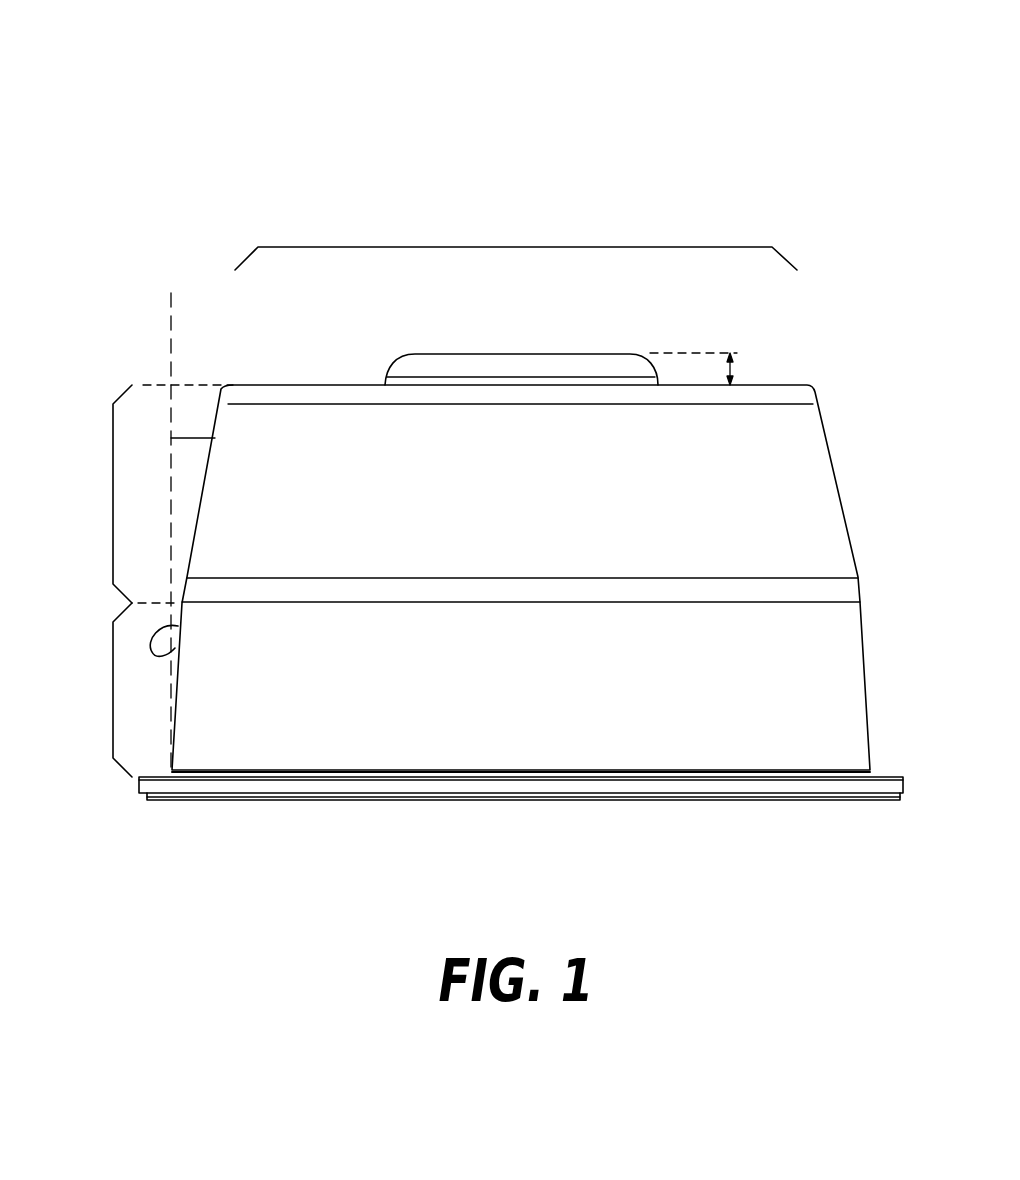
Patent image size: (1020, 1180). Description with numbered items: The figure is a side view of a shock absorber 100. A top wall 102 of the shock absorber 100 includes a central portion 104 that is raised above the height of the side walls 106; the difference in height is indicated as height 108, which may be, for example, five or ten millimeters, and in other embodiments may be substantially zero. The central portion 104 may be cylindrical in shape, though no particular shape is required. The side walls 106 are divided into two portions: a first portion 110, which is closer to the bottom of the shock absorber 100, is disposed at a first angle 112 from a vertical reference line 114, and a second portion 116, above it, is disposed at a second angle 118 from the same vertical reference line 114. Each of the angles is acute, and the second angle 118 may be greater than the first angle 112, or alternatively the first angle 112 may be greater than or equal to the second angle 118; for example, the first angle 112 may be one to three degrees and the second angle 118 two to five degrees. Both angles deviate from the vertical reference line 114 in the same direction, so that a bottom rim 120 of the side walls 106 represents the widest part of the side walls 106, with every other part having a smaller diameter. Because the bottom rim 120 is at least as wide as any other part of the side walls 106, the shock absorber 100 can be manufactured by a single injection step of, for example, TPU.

The shock absorber 100 is at (258, 91).
The top wall 102 is at (517, 247).
The central portion 104 is at (527, 353).
The side walls 106 is at (812, 498).
The height 108 is at (733, 368).
The first portion 110 is at (113, 693).
The first angle 112 is at (175, 648).
The vertical reference line 114 is at (170, 331).
The second portion 116 is at (113, 485).
The second angle 118 is at (198, 438).
The bottom rim 120 is at (157, 800).